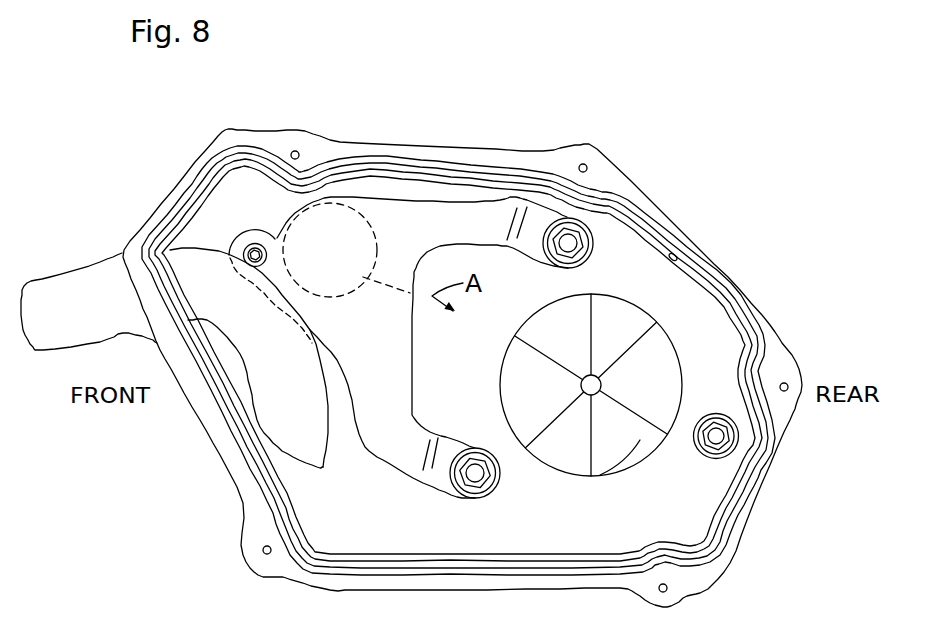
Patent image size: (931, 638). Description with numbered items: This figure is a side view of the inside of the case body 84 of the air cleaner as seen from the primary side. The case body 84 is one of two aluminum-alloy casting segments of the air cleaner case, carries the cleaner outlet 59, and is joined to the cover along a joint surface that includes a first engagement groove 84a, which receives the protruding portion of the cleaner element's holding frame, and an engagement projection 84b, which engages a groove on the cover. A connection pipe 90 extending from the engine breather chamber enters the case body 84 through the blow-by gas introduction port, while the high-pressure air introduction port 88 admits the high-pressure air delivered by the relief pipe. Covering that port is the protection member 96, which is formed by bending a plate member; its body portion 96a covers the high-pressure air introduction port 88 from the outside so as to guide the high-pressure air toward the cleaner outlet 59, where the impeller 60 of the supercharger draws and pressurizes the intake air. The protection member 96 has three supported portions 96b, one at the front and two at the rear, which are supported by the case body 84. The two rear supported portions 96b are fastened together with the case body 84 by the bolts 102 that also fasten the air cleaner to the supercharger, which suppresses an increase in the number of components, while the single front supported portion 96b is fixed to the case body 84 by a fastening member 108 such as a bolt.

The case body 84 is at (769, 514).
The first engagement groove 84a is at (680, 257).
The engagement projection 84b is at (663, 237).
The connection pipe 90 is at (76, 282).
The protection member 96 is at (392, 195).
The body portion 96a is at (387, 263).
The supported portions 96b is at (262, 229).
The fastening member 108 is at (252, 252).
The high-pressure air introduction port 88 is at (347, 199).
The bolts 102 is at (568, 243).
The impeller 60 is at (665, 362).
The cleaner outlet 59 is at (609, 465).